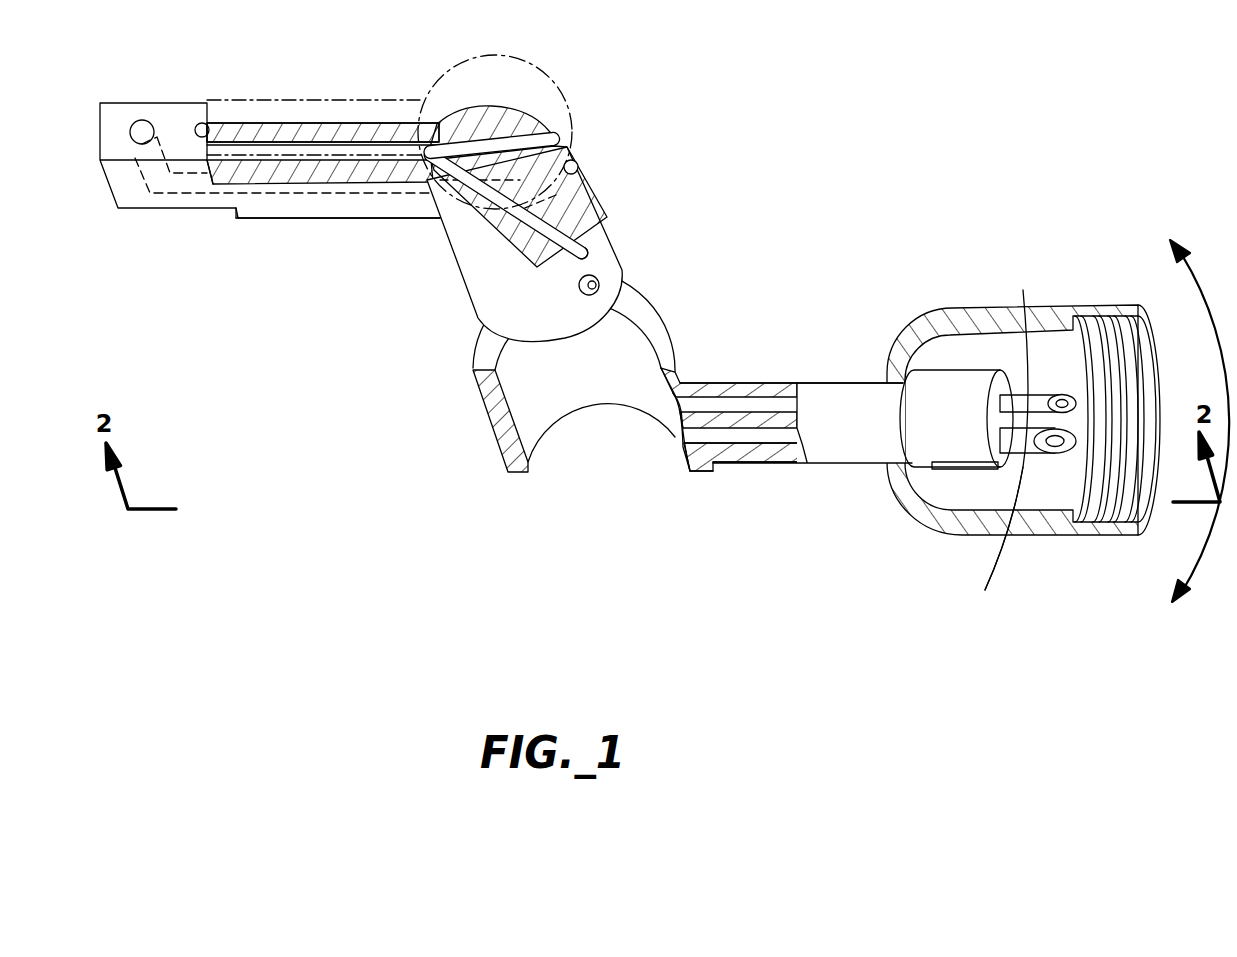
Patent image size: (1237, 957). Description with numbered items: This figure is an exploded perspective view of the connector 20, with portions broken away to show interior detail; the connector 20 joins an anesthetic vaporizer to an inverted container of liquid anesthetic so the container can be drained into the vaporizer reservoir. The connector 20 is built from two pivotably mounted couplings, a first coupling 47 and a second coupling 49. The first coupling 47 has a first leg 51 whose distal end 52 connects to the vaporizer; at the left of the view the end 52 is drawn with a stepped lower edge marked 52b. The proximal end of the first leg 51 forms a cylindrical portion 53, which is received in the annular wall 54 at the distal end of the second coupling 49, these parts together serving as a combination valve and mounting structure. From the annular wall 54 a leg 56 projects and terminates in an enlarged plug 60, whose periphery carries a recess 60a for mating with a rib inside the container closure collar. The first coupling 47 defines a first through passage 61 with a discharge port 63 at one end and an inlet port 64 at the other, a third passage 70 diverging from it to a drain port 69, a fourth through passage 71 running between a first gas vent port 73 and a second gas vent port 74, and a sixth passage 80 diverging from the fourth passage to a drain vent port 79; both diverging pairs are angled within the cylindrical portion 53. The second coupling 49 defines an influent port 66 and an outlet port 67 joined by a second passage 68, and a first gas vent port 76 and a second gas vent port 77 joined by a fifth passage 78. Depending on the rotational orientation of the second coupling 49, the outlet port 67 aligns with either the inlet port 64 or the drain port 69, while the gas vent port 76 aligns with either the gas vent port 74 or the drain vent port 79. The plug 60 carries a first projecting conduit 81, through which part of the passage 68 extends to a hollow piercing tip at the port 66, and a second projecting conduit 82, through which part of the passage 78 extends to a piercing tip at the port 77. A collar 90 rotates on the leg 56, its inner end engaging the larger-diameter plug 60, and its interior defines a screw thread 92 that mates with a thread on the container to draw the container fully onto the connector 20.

The connector 20 is at (460, 490).
The first coupling 47 is at (404, 226).
The second coupling 49 is at (846, 380).
The first leg 51 is at (380, 222).
The distal end 52 is at (92, 262).
The block step 52b is at (236, 210).
The cylindrical portion 53 is at (477, 268).
The annular wall 54 is at (680, 345).
The leg 56 is at (862, 456).
The plug 60 is at (920, 452).
The recess 60a is at (950, 468).
The first through passage 61 is at (140, 175).
The discharge port 63 is at (142, 120).
The inlet port 64 is at (599, 286).
The influent port 66 is at (1077, 440).
The outlet port 67 is at (688, 440).
The second passage 68 is at (736, 442).
The drain port 69 is at (578, 166).
The third passage 70 is at (556, 195).
The fourth through passage 71 is at (238, 158).
The first gas vent port 73 is at (202, 122).
The second gas vent port 74 is at (582, 256).
The first gas vent port 76 is at (674, 403).
The second gas vent port 77 is at (1077, 403).
The fifth passage 78 is at (720, 402).
The drain vent port 79 is at (553, 137).
The sixth passage 80 is at (447, 123).
The first projecting conduit 81 is at (987, 538).
The second projecting conduit 82 is at (1023, 290).
The collar 90 is at (976, 540).
The screw thread 92 is at (1143, 515).